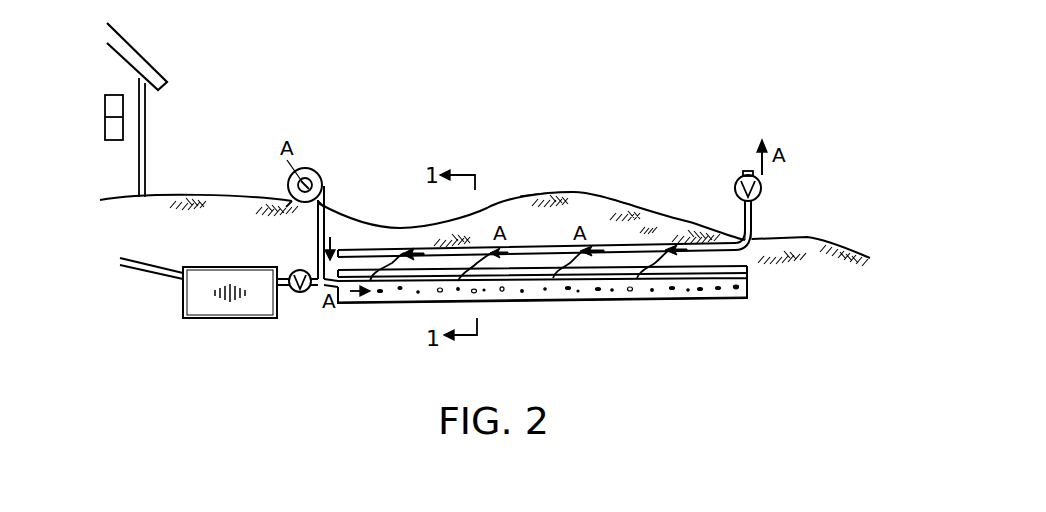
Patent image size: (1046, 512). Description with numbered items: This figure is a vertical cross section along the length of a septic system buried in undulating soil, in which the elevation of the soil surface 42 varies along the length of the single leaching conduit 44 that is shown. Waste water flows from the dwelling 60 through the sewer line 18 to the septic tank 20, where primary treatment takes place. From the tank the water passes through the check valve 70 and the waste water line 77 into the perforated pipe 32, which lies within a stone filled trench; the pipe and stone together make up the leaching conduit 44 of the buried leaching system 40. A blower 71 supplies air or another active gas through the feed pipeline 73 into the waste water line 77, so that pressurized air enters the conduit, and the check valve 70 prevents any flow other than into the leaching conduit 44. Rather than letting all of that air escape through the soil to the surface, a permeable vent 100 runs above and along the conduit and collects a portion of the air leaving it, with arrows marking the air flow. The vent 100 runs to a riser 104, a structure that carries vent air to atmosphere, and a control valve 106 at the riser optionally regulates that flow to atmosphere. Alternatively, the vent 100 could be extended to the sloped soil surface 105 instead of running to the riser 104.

The dwelling 60 is at (147, 125).
The blower 71 is at (313, 168).
The feed pipeline 73 is at (318, 247).
The waste water line 77 is at (283, 270).
The check valve 70 is at (298, 292).
The septic tank 20 is at (266, 318).
The sewer line 18 is at (142, 260).
The vent 100 is at (528, 247).
The soil surface 42 is at (604, 198).
The control valve 106 is at (761, 187).
The riser 104 is at (753, 230).
The sloped soil surface 105 is at (840, 247).
The leaching conduit 44 is at (748, 290).
The perforated pipe 32 is at (582, 283).
The leaching system 40 is at (518, 308).